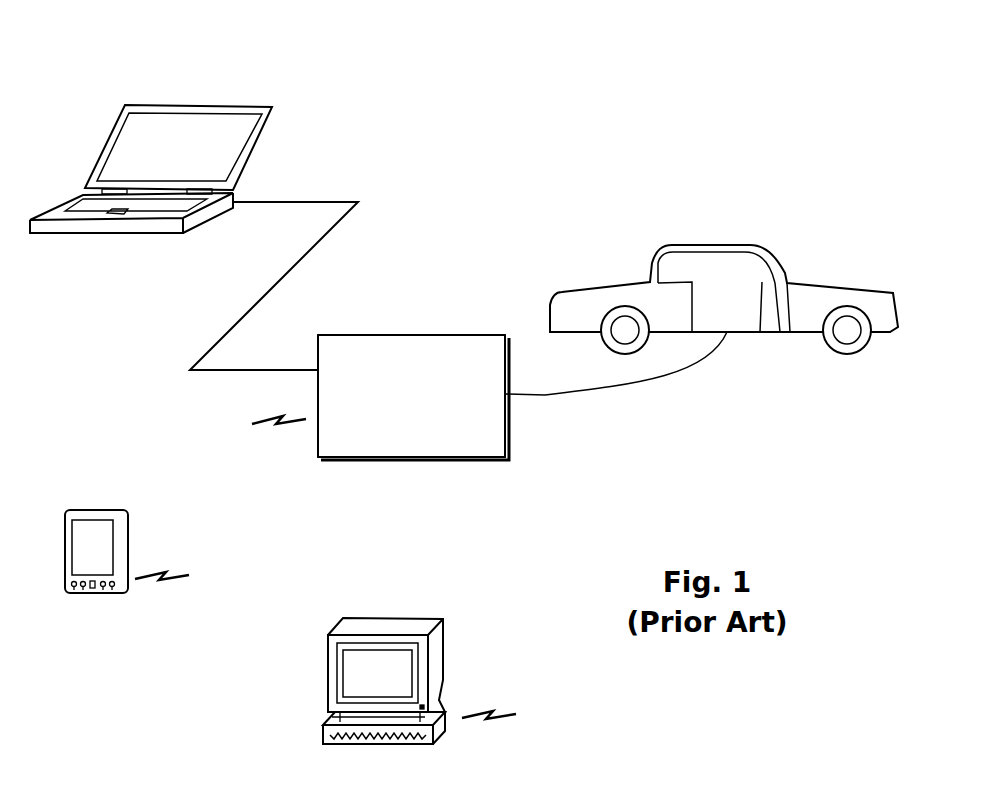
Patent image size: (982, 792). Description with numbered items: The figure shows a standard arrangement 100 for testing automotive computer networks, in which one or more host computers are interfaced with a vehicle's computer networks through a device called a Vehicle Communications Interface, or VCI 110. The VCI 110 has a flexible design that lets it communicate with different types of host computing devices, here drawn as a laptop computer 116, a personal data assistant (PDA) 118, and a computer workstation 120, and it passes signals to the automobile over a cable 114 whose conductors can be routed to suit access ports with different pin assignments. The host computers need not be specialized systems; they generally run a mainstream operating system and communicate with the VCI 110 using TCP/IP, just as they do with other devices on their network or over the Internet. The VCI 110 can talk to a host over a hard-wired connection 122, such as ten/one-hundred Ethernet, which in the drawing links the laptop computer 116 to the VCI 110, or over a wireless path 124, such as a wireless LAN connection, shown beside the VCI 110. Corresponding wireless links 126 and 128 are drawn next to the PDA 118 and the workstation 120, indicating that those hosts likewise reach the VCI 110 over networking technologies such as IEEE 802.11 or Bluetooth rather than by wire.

The prior art vehicle diagnostic system 100 is at (592, 66).
The Vehicle Communications Interface (VCI) 110 is at (393, 434).
The cable 114 is at (710, 368).
The laptop computer 116 is at (191, 156).
The personal data assistant (PDA) 118 is at (77, 557).
The computer workstation 120 is at (397, 684).
The hard-wired connection 122 is at (290, 266).
The wireless path 124 is at (268, 431).
The wireless connection 126 is at (181, 585).
The computer workstation 128 is at (498, 727).